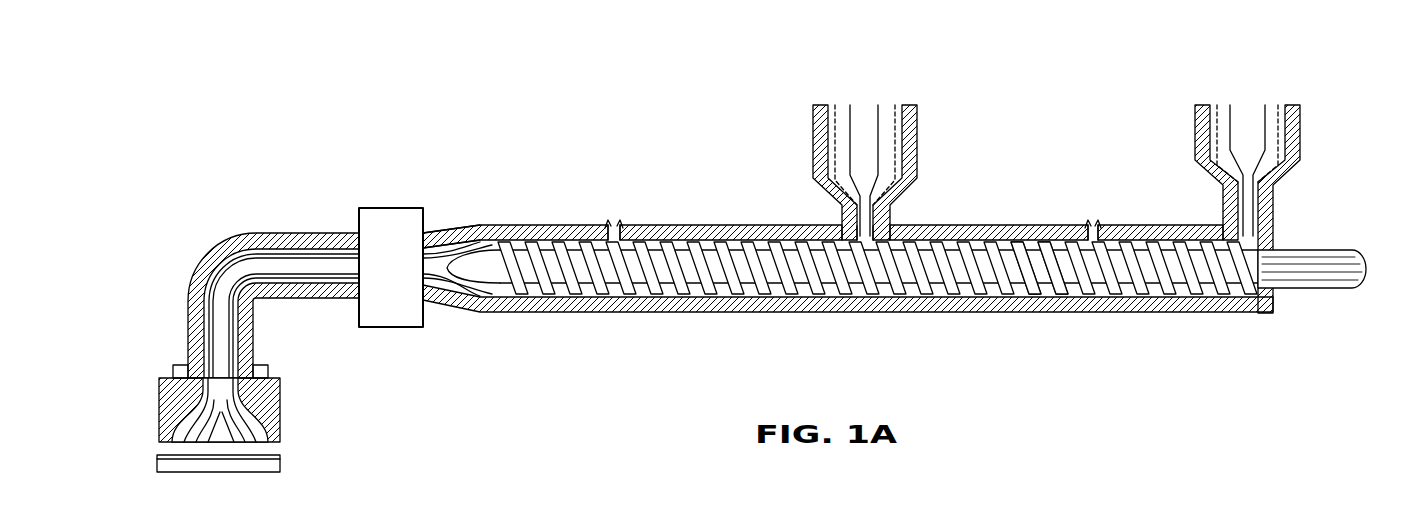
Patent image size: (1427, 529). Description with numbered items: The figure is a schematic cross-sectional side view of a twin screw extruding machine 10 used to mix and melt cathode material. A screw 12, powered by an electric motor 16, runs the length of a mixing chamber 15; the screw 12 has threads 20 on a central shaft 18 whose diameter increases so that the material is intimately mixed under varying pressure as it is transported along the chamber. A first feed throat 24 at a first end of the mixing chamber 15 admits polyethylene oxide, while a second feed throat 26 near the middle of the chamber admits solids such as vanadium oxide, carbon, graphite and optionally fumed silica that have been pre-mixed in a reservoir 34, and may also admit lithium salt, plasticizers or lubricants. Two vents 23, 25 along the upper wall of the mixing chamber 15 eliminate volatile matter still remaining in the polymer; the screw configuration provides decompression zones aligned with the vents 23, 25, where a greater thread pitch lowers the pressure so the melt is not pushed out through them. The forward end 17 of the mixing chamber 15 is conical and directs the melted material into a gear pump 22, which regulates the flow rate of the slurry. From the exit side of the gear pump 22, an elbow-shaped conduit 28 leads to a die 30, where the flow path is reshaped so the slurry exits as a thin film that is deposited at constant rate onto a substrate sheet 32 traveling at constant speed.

The twin screw extruding machine 10 is at (246, 104).
The screw 12 is at (575, 286).
The mixing chamber 15 is at (990, 226).
The electric motor 16 is at (1338, 250).
The forward end 17 is at (434, 267).
The central shaft 18 is at (646, 273).
The threads 20 is at (1032, 253).
The gear pump 22 is at (393, 218).
The vent 23 is at (1093, 208).
The first feed throat 24 is at (1252, 122).
The vent 25 is at (614, 208).
The second feed throat 26 is at (862, 222).
The elbow-shaped conduit 28 is at (219, 257).
The die 30 is at (278, 403).
The substrate sheet 32 is at (276, 464).
The reservoir 34 is at (862, 118).